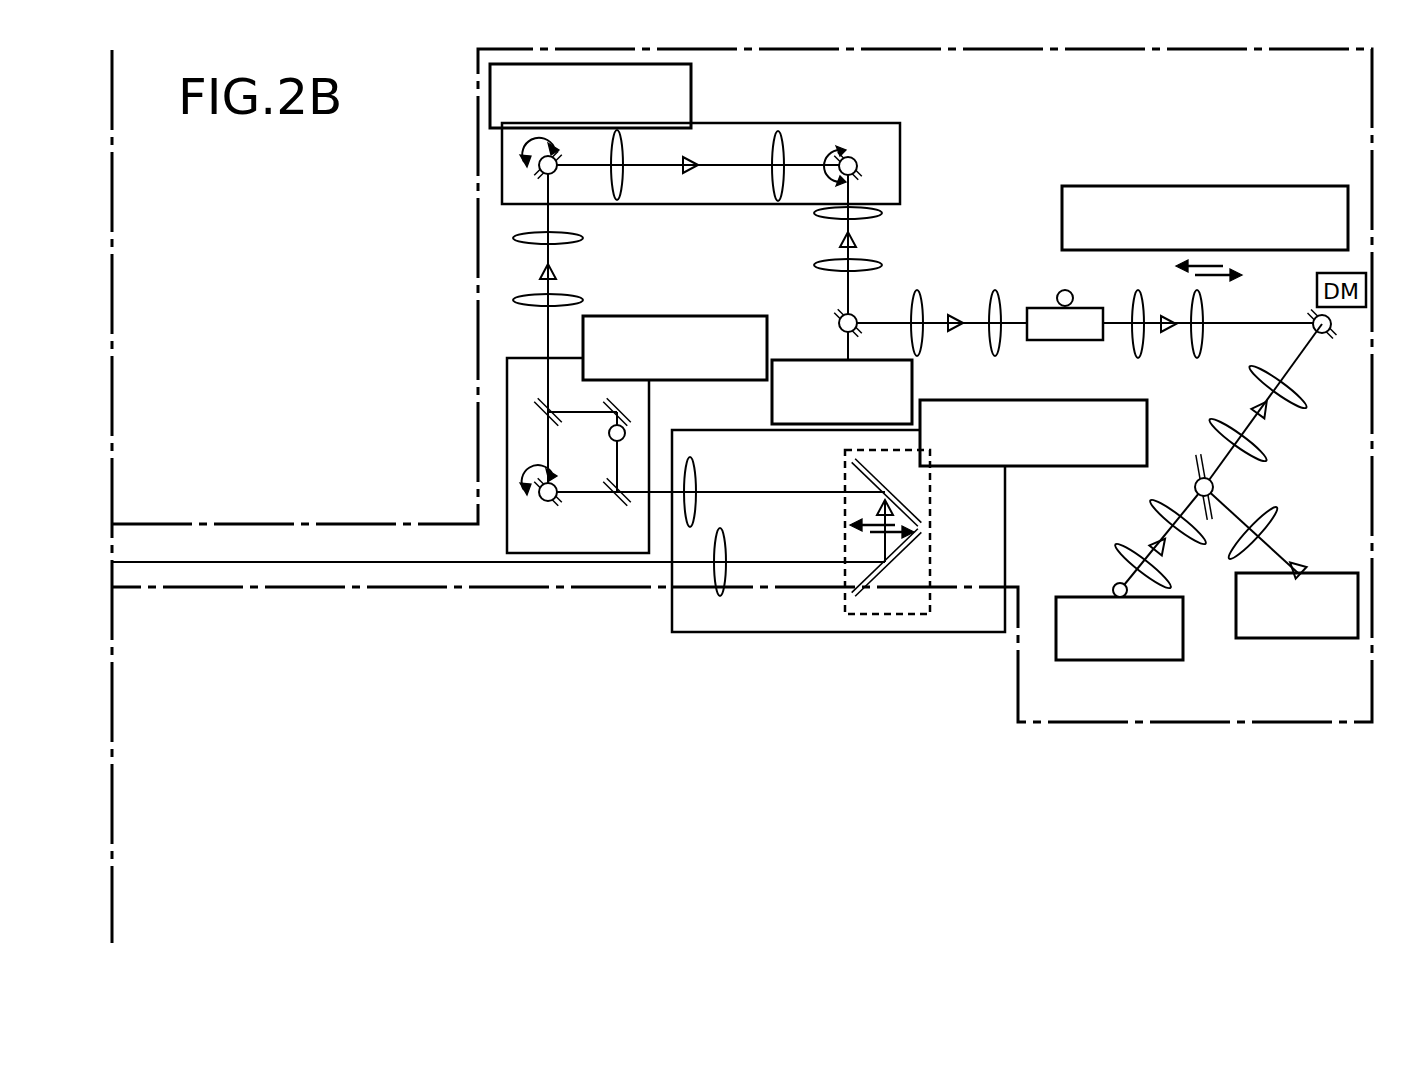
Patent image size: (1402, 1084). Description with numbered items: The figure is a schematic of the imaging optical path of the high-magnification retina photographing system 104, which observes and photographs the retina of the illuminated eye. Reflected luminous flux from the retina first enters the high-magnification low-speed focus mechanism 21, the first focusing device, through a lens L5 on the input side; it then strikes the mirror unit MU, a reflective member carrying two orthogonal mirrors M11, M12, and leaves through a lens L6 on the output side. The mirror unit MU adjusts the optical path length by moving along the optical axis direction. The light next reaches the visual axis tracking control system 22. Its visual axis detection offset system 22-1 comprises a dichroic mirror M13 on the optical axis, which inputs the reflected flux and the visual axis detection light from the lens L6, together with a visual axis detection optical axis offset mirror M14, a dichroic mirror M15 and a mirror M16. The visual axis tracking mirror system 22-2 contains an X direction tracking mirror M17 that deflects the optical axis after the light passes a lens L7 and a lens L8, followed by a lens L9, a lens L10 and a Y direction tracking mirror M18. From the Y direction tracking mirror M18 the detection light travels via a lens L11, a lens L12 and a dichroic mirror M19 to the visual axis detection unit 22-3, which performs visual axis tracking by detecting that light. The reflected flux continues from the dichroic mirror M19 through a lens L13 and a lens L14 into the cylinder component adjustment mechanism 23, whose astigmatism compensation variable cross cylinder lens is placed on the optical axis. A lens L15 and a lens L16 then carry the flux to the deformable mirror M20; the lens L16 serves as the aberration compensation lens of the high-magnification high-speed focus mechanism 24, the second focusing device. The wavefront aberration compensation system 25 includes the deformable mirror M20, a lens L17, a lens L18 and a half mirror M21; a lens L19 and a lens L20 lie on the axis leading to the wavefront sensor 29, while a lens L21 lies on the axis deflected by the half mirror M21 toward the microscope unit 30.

The high-magnification retina photographing system 104 is at (1070, 725).
The visual axis tracking control system 22 is at (705, 243).
The visual axis detection offset system 22-1 is at (708, 316).
The visual axis tracking mirror system 22-2 is at (691, 90).
The visual axis detection unit 22-3 is at (828, 360).
The high-magnification low-speed focus mechanism 21 is at (1035, 468).
The cylinder component adjustment mechanism 23 is at (1060, 290).
The high-magnification high-speed focus mechanism 24 is at (1268, 186).
The wavefront aberration compensation system 25 is at (1264, 482).
The wavefront sensor 29 is at (1155, 662).
The microscope unit 30 is at (1335, 640).
The mirror unit MU is at (845, 600).
The mirror M11 is at (905, 561).
The mirror M12 is at (905, 497).
The dichroic mirror M13 is at (614, 513).
The visual axis detection optical axis offset mirror M14 is at (541, 503).
The dichroic mirror M15 is at (538, 400).
The mirror M16 is at (630, 416).
The X direction tracking mirror M17 is at (537, 169).
The Y direction tracking mirror M18 is at (838, 152).
The dichroic mirror M19 is at (838, 312).
The deformable mirror M20 is at (1308, 310).
The half mirror M21 is at (1197, 450).
The lens L5 is at (726, 535).
The lens L6 is at (697, 470).
The lens L7 is at (582, 300).
The lens L8 is at (582, 238).
The lens L9 is at (624, 180).
The lens L10 is at (770, 150).
The lens L11 is at (882, 213).
The lens L12 is at (882, 265).
The lens L13 is at (920, 350).
The lens L14 is at (998, 350).
The lens L15 is at (1141, 352).
The aberration compensation lens L16 is at (1200, 340).
The lens L17 is at (1292, 381).
The lens L18 is at (1262, 440).
The lens L19 is at (1152, 505).
The lens L20 is at (1118, 564).
The lens L21 is at (1268, 529).